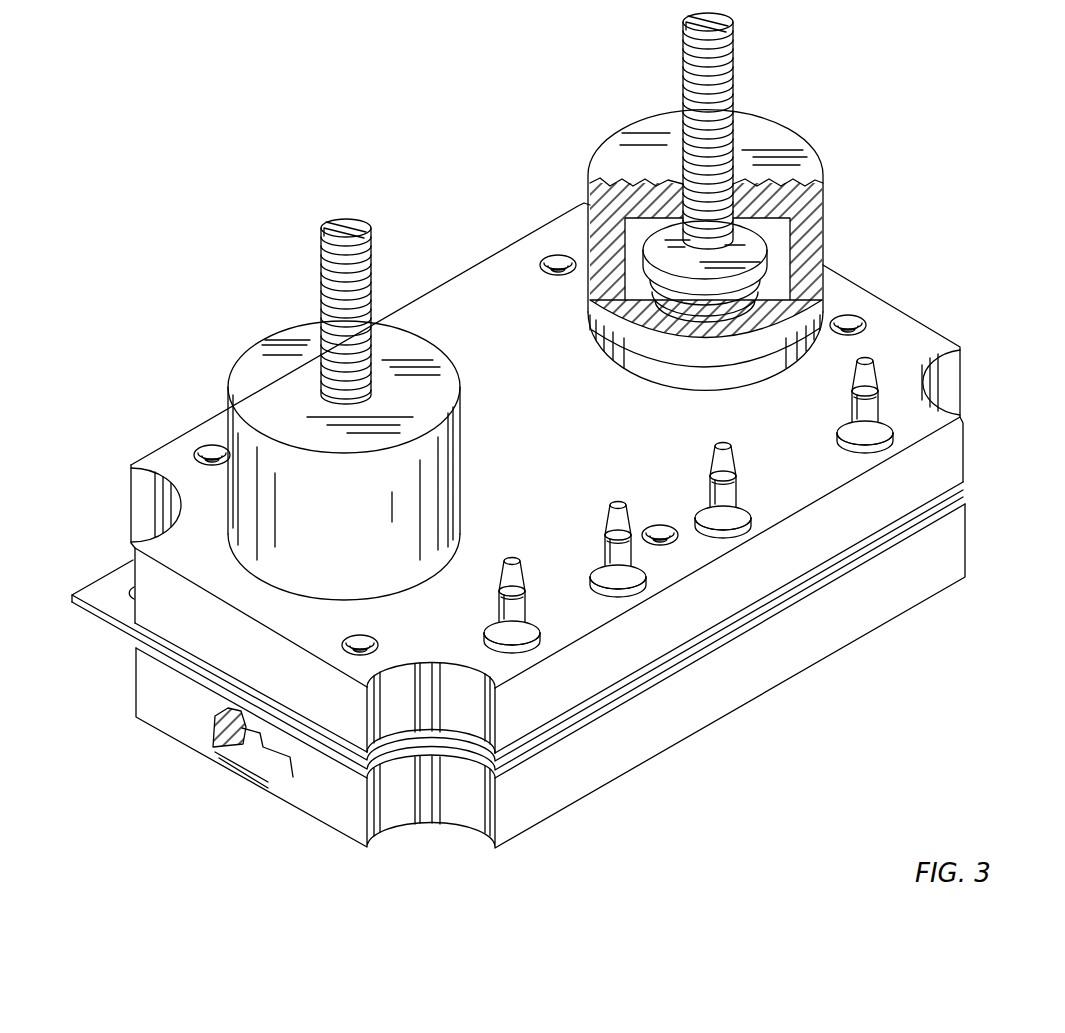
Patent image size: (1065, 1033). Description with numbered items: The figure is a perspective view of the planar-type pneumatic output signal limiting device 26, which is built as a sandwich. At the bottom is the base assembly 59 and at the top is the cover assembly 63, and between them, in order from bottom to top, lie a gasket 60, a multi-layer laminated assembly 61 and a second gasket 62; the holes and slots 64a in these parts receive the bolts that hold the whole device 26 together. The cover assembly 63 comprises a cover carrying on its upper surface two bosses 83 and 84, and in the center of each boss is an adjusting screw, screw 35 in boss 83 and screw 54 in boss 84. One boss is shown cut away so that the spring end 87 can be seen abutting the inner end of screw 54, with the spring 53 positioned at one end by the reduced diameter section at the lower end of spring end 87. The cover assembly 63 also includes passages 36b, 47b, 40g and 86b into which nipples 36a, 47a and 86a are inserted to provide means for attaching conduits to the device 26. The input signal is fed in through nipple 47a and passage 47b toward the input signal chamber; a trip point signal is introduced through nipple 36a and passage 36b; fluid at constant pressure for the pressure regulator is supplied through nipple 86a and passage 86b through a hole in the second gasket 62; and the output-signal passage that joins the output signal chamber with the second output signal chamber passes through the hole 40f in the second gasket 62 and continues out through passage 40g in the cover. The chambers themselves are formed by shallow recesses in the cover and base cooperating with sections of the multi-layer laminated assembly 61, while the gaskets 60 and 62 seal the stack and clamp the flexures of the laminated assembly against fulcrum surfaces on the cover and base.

The pneumatic output signal limiting device 26 is at (478, 248).
The adjusting screw 35 is at (320, 280).
The nipple 36a is at (522, 567).
The passage 36b is at (540, 642).
The hole 40f is at (747, 520).
The passage 40g is at (733, 443).
The nipple 47a is at (632, 503).
The passage 47b is at (647, 573).
The spring 53 is at (824, 290).
The adjusting screw 54 is at (733, 95).
The base assembly 59 is at (453, 798).
The gasket 60 is at (521, 764).
The multi-layer laminated assembly 61 is at (557, 748).
The second gasket 62 is at (590, 732).
The cover assembly 63 is at (940, 373).
The holes and slots 64a is at (555, 258).
The boss 83 is at (272, 366).
The boss 84 is at (782, 140).
The nipple 86a is at (873, 358).
The passage 86b is at (892, 434).
The spring end 87 is at (770, 243).